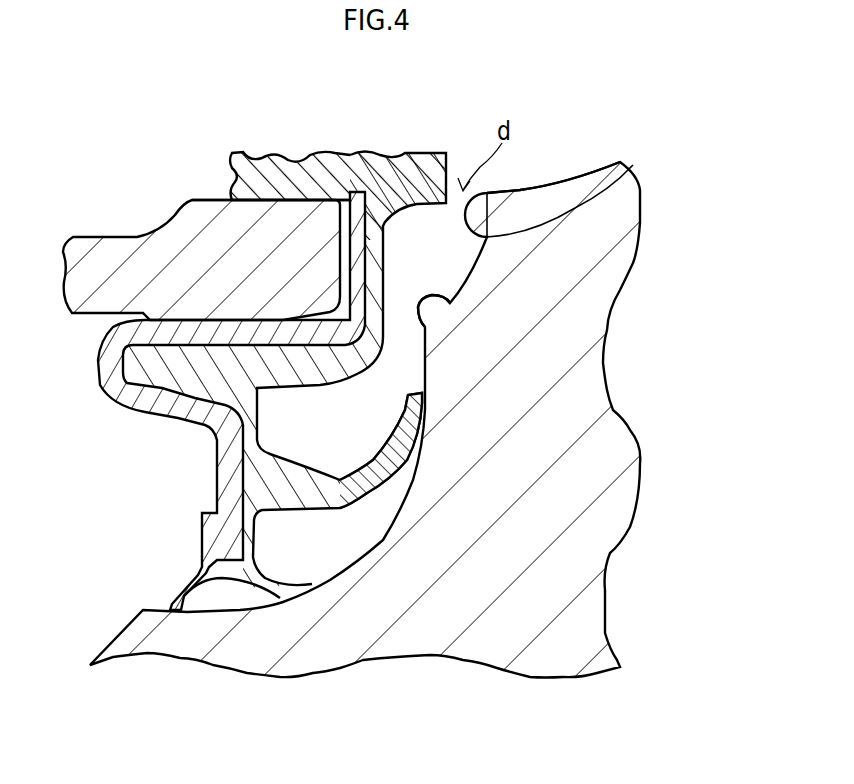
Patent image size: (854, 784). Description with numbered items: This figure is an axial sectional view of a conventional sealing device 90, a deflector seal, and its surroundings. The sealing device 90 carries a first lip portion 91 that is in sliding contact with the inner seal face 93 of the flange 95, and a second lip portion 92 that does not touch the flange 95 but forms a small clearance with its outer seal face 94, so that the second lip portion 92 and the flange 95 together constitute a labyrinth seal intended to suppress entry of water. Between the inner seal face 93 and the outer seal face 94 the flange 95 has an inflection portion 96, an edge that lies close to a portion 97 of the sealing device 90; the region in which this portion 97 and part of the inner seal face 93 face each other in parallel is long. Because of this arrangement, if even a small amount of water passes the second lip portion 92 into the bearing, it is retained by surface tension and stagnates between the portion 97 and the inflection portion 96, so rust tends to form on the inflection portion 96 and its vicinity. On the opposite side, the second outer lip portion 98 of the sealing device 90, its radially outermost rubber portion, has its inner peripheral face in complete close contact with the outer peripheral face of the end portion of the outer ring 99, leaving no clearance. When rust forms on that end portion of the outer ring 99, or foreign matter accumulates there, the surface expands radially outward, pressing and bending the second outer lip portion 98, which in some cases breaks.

The sealing device 90 is at (159, 495).
The first lip portion 91 is at (373, 483).
The second lip portion 92 is at (403, 163).
The inner seal face 93 is at (412, 408).
The outer seal face 94 is at (563, 214).
The flange 95 is at (578, 170).
The inflection portion 96 is at (450, 303).
The portion of the sealing device 97 is at (280, 250).
The second outer lip portion 98 is at (288, 173).
The outer ring 99 is at (267, 213).